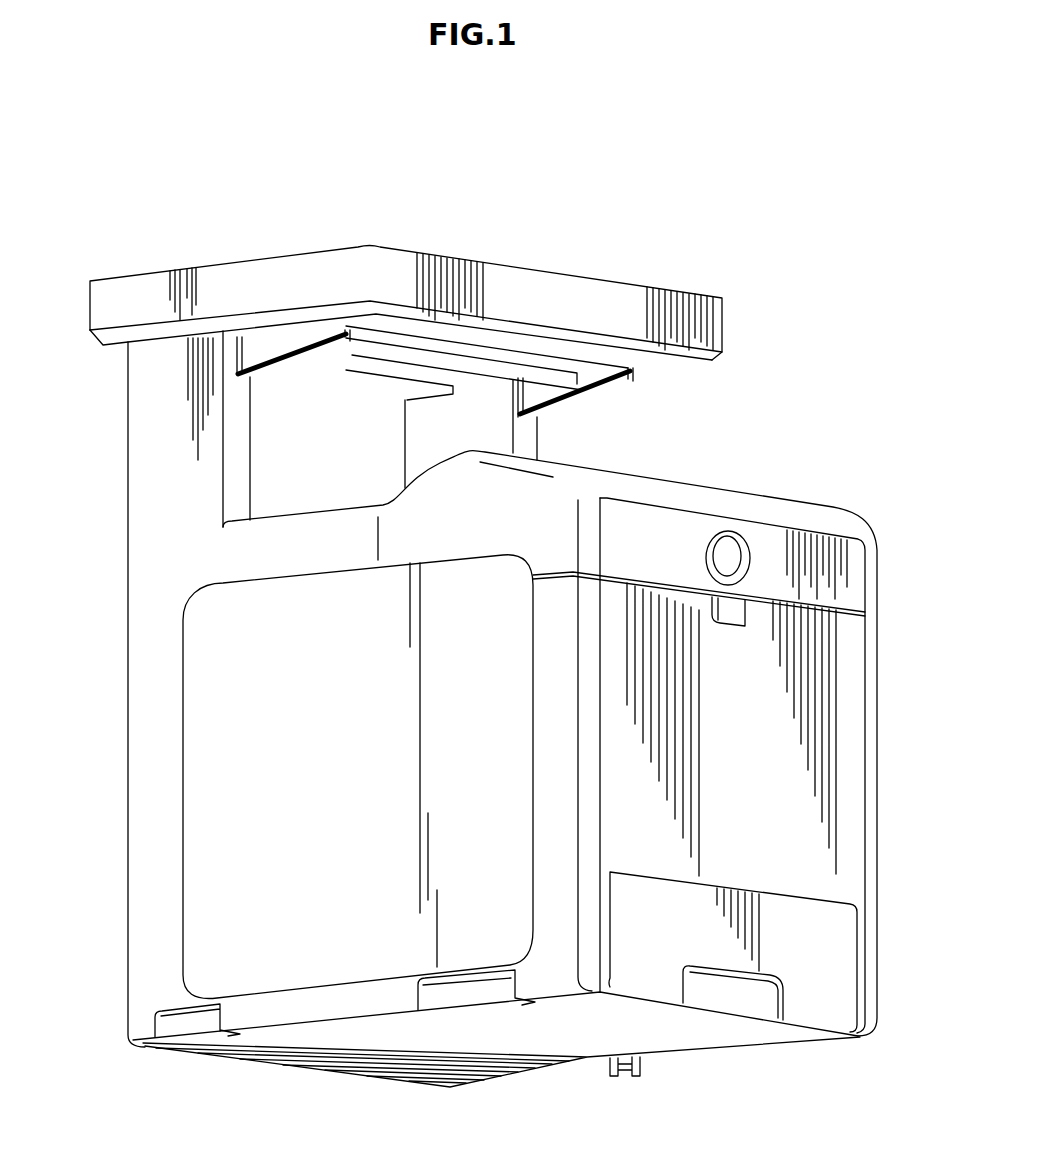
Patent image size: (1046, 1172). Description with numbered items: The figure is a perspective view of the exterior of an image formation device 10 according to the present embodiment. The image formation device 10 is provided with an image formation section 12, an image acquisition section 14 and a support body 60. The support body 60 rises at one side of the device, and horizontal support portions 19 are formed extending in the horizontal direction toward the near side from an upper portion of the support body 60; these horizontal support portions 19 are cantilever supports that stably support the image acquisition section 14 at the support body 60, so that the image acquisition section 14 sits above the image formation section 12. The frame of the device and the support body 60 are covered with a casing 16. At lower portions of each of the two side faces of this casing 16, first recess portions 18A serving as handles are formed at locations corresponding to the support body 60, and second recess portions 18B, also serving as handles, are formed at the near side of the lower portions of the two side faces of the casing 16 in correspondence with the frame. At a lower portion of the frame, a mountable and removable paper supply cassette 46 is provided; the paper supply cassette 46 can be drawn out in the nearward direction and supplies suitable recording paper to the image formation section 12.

The image formation device 10 is at (788, 222).
The image formation section 12 is at (890, 574).
The image acquisition section 14 is at (236, 262).
The casing 16 is at (143, 620).
The first recess portion 18A is at (217, 1023).
The second recess portion 18B is at (512, 985).
The horizontal support portion 19 is at (282, 346).
The paper supply cassette 46 is at (847, 972).
The support body 60 is at (116, 487).